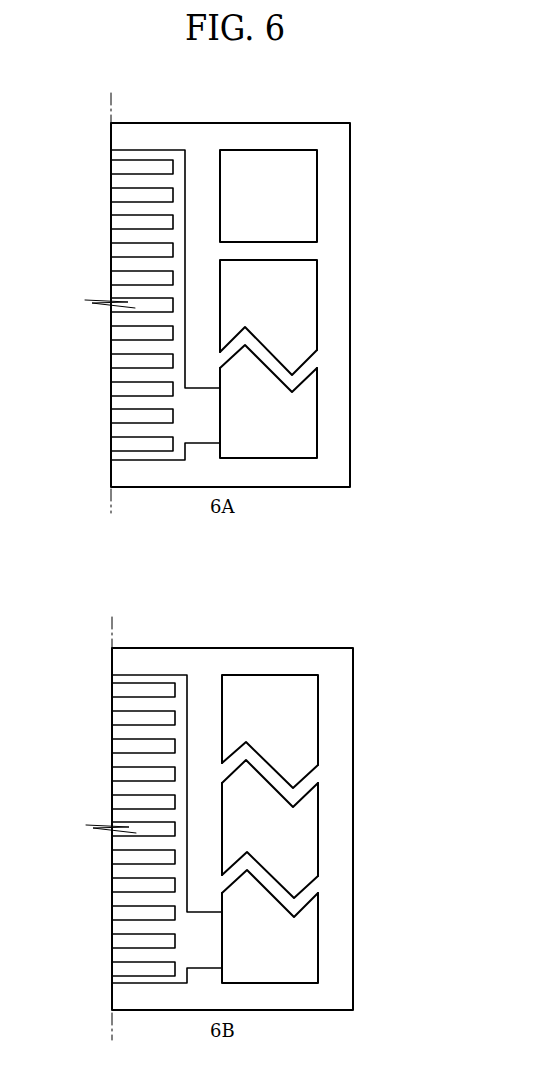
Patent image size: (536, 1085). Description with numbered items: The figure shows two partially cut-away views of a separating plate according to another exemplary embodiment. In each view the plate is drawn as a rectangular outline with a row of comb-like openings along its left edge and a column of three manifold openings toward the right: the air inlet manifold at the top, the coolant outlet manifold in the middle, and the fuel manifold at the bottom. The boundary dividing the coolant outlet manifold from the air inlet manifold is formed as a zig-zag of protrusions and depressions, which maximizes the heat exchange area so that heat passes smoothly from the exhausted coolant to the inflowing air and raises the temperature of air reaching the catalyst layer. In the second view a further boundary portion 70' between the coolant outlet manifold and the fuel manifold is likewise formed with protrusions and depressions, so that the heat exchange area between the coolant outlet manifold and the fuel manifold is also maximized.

The boundary portion 70' is at (321, 774).